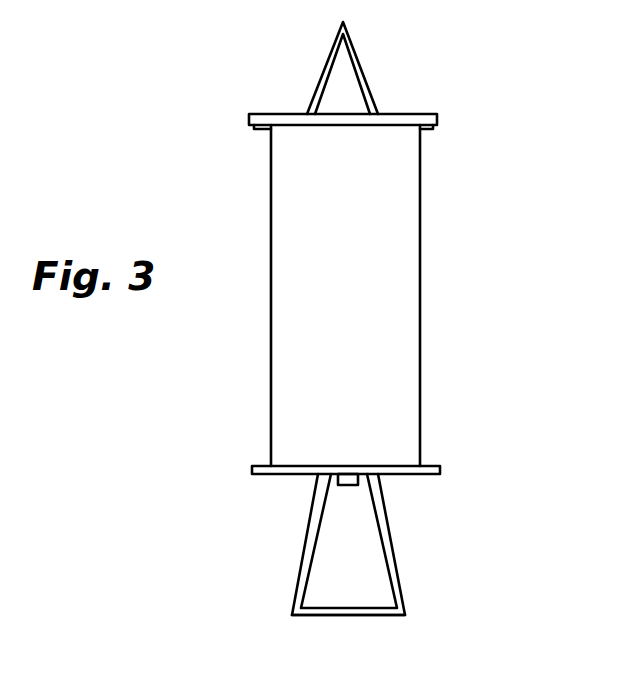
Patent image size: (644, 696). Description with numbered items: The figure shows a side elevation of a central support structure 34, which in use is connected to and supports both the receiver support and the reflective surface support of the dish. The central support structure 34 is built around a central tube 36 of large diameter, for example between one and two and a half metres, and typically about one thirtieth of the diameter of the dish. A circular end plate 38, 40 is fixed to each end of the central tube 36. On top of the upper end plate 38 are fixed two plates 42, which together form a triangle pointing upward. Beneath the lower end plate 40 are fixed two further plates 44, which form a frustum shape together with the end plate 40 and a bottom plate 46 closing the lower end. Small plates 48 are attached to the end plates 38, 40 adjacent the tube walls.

The model rocket 34 is at (544, 97).
The cylindrical body tube 36 is at (420, 270).
The upper plate / cap 38 is at (269, 114).
The lower plate / cap 40 is at (258, 475).
The nose cone 42 is at (323, 66).
The nozzle / tail cone 44 is at (303, 545).
The nozzle outlet 46 is at (343, 616).
The connector / flange 48 is at (260, 131).